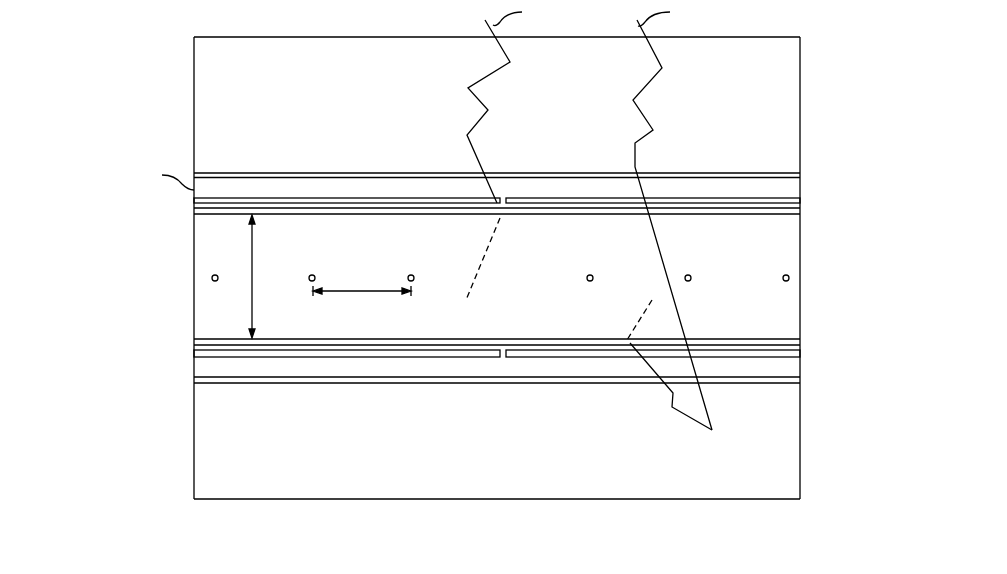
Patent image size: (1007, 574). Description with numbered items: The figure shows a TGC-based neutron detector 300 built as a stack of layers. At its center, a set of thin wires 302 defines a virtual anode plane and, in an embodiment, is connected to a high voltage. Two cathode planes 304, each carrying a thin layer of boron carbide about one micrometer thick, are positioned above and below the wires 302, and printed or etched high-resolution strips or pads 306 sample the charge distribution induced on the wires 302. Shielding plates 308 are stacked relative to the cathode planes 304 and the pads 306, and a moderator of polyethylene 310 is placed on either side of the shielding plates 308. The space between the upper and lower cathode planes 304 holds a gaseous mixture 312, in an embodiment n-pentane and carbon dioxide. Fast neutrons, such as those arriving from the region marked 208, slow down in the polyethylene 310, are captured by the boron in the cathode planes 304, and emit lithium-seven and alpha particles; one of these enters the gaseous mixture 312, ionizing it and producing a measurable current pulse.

The TGC detector 300 is at (156, 24).
The thin wires 302 is at (789, 278).
The cathode planes 304 is at (153, 411).
The strips or pads 306 is at (800, 200).
The shielding plates 308 is at (800, 175).
The polyethylene 310 is at (143, 484).
The gaseous mixture 312 is at (789, 322).
The neutron source region 208 is at (818, 24).